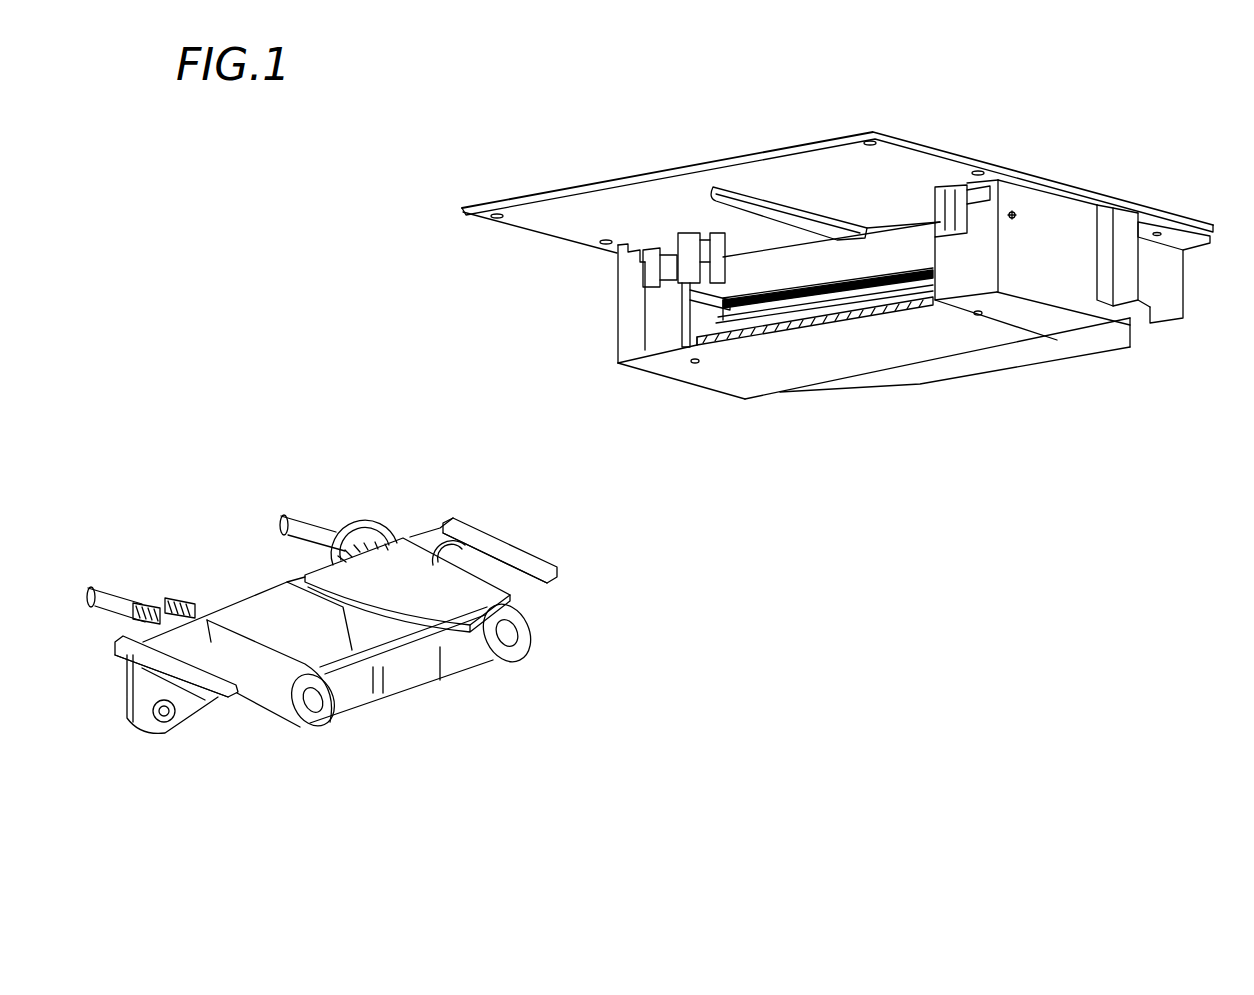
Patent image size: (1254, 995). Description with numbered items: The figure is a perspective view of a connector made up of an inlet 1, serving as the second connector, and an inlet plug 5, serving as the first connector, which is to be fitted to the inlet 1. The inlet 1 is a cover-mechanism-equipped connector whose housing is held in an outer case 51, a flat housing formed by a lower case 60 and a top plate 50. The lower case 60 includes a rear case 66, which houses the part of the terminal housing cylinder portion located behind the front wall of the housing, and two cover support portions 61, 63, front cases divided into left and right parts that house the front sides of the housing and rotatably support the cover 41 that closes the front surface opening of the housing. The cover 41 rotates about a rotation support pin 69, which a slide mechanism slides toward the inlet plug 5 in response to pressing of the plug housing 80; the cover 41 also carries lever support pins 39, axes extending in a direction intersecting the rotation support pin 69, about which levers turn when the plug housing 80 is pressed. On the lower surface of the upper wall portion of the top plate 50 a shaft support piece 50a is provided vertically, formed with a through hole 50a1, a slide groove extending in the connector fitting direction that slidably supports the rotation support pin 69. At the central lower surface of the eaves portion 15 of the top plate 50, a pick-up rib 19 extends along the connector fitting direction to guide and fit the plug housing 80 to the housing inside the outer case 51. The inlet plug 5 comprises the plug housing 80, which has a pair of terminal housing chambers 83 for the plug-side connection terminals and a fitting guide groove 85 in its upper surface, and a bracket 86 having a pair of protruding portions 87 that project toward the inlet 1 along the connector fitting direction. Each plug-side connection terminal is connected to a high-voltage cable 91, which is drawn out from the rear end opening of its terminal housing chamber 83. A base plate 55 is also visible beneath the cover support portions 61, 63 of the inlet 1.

The inlet 1 is at (706, 402).
The inlet plug 5 is at (423, 703).
The eaves portion 15 is at (850, 163).
The pick-up rib 19 is at (715, 213).
The lever support pins 39 is at (702, 361).
The cover 41 is at (820, 272).
The top plate 50 is at (940, 140).
The shaft support piece 50a is at (703, 248).
The through hole 50a1 is at (683, 273).
The outer case 51 is at (1010, 378).
The base plate 55 is at (785, 367).
The lower case 60 is at (970, 393).
The cover support portion 61 is at (648, 320).
The cover support portion 63 is at (1063, 270).
The rear case 66 is at (1160, 292).
The rotation support pin 69 is at (1017, 213).
The plug housing 80 is at (285, 603).
The terminal housing chambers 83 is at (310, 690).
The fitting guide groove 85 is at (393, 635).
The bracket 86 is at (482, 522).
The protruding portions 87 is at (210, 677).
The high-voltage cable 91 is at (108, 594).